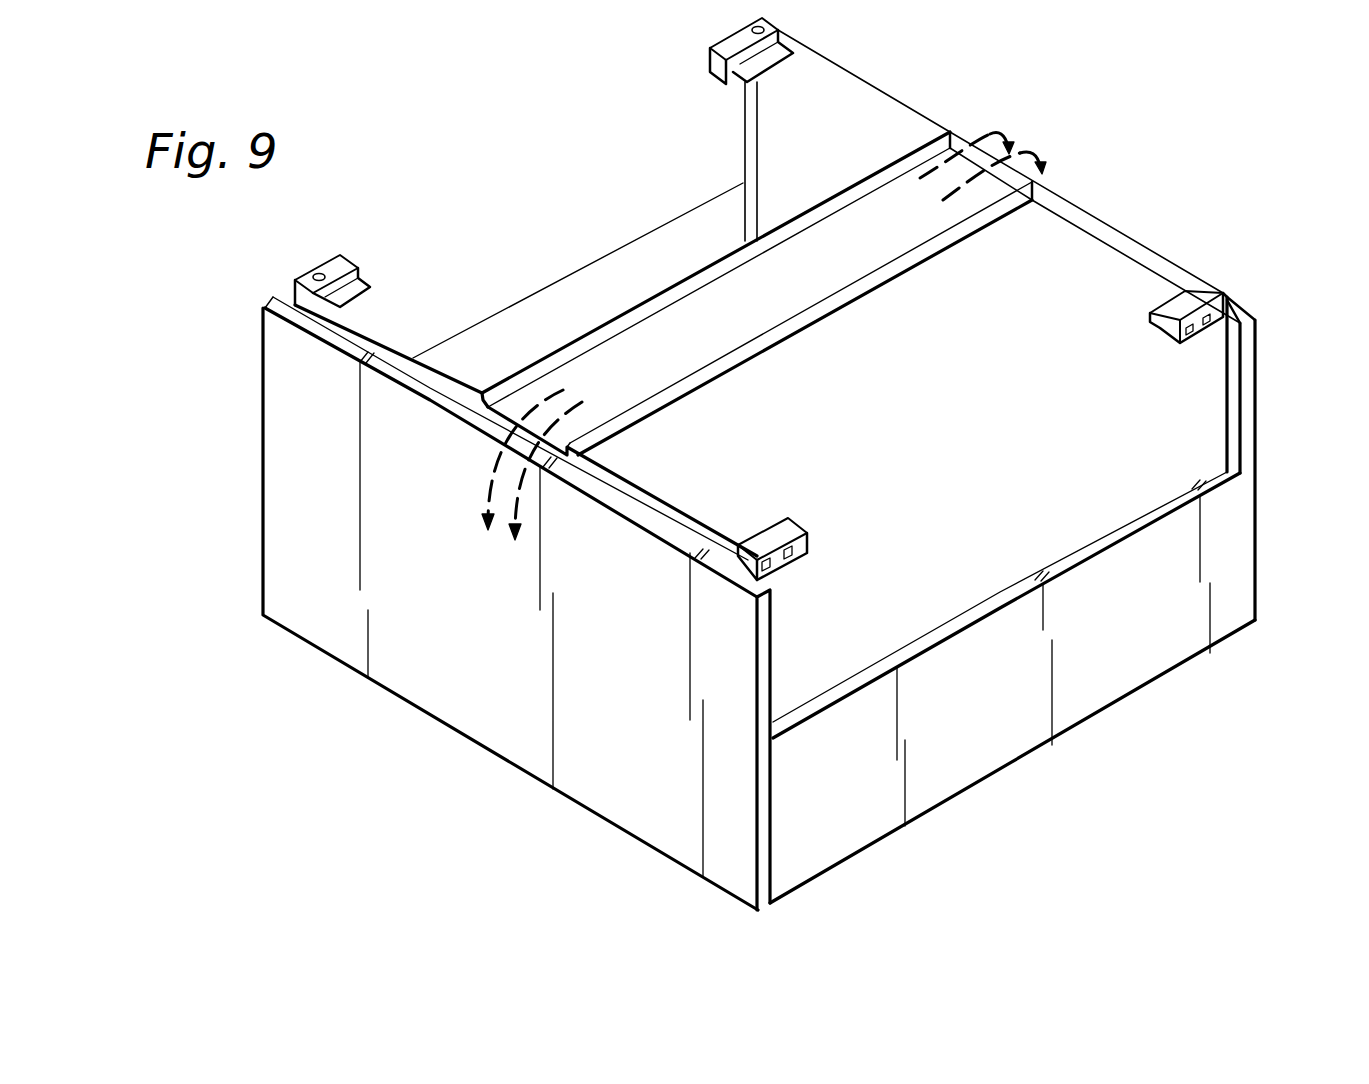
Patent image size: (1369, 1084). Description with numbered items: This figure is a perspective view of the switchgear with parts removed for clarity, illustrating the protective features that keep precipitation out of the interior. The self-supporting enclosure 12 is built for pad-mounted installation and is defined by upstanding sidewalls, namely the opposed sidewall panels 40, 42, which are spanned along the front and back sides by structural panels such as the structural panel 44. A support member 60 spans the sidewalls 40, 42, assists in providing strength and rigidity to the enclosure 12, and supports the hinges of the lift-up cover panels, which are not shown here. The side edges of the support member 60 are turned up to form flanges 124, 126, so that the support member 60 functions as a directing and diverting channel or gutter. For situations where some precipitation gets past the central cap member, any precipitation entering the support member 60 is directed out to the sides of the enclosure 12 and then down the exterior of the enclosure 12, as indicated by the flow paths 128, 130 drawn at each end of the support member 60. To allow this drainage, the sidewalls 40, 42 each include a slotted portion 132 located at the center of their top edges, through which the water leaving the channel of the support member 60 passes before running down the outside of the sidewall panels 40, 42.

The enclosure 12 is at (328, 655).
The sidewall panel 40 is at (642, 802).
The sidewall panel 42 is at (1108, 386).
The structural panel 44 is at (1233, 568).
The support member 60 is at (705, 382).
The flange 124 is at (637, 305).
The flange 126 is at (888, 275).
The precipitation flow path 128 is at (503, 505).
The precipitation flow path 130 is at (1020, 143).
The slotted portion 132 is at (493, 410).